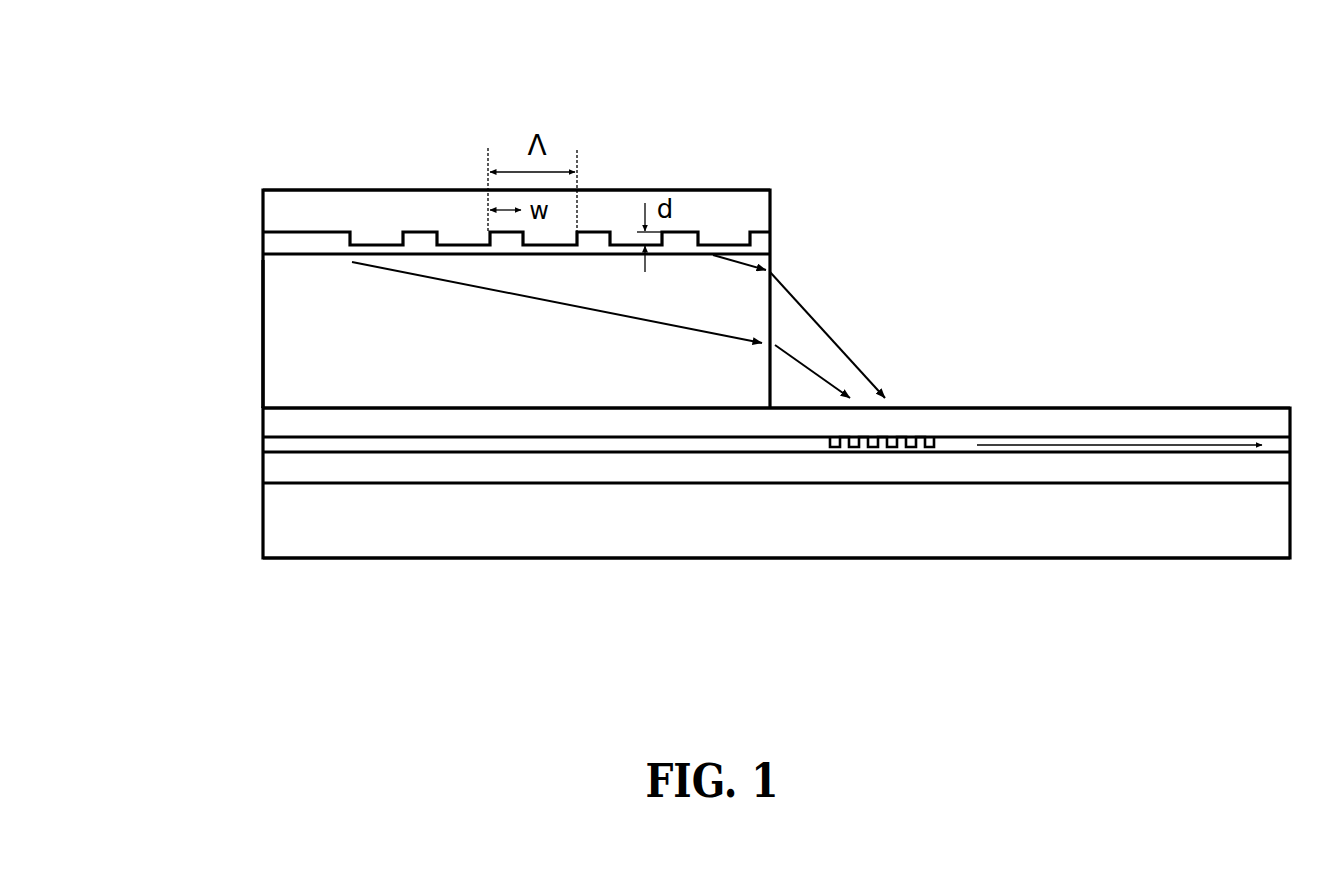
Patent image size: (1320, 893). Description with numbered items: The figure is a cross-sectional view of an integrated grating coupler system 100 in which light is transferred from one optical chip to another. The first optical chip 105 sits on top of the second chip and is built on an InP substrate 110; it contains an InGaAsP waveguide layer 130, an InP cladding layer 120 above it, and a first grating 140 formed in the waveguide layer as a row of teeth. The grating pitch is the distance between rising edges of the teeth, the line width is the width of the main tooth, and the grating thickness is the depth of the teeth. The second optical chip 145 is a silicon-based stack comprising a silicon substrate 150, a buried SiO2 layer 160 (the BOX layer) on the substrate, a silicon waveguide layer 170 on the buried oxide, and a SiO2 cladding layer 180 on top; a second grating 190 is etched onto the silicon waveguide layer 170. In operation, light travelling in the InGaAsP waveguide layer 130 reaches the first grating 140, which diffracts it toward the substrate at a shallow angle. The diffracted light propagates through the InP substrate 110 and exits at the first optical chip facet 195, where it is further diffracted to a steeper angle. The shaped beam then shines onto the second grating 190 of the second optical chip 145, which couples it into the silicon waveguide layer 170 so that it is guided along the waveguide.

The integrated grating coupler system 100 is at (246, 50).
The first optical chip 105 is at (232, 187).
The InP substrate 110 is at (302, 345).
The InP cladding layer 120 is at (425, 210).
The InGaAsP waveguide layer 130 is at (337, 245).
The first grating 140 is at (627, 245).
The second optical chip 145 is at (233, 408).
The silicon substrate 150 is at (542, 520).
The buried SiO2 layer 160 is at (673, 467).
The silicon waveguide layer 170 is at (595, 447).
The SiO2 cladding layer 180 is at (720, 423).
The second grating 190 is at (863, 452).
The first optical chip facet 195 is at (772, 293).